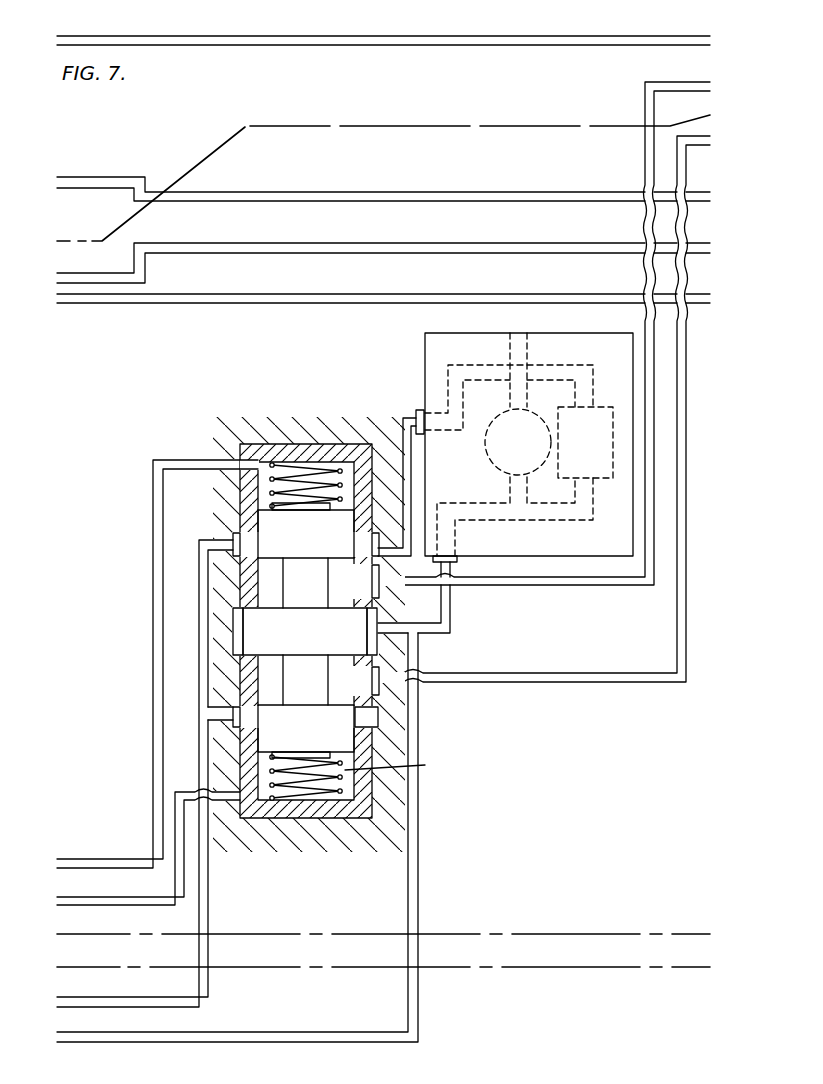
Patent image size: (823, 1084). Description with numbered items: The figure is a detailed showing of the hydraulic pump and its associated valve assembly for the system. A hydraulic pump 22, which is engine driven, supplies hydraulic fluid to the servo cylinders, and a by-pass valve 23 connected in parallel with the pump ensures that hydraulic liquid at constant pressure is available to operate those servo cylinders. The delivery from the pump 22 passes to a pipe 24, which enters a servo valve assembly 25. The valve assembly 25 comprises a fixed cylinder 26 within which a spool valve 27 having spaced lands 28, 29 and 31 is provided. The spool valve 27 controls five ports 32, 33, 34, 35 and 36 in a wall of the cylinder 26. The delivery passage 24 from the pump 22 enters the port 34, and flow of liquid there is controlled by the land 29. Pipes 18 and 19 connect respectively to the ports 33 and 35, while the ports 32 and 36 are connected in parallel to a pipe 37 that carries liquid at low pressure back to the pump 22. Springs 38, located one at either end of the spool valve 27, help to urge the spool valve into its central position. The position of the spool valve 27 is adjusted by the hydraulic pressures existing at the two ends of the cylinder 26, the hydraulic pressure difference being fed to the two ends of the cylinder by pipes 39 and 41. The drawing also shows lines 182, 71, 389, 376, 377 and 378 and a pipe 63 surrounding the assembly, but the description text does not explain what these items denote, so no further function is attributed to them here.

The boom line 182 is at (324, 43).
The pivot axis line 71 is at (208, 152).
The axis line 389 is at (652, 930).
The hydraulic line 376 is at (525, 193).
The hydraulic line 377 is at (615, 245).
The hydraulic line 378 is at (612, 297).
The pipe 19 is at (645, 113).
The pipe 18 is at (677, 155).
The hydraulic pump 22 is at (497, 465).
The by-pass valve 23 is at (600, 468).
The servo valve assembly 25 is at (320, 840).
The pipe 39 is at (85, 862).
The port 36 is at (240, 540).
The port 32 is at (233, 708).
The pipe 41 is at (73, 902).
The conduit 63 is at (305, 1030).
The pipe 37 is at (410, 452).
The pipe 24 is at (448, 605).
The springs 38 is at (277, 505).
The land 28 is at (306, 534).
The port 35 is at (355, 582).
The land 29 is at (305, 631).
The port 34 is at (252, 631).
The port 33 is at (357, 683).
The land 31 is at (318, 728).
The spool valve 27 is at (312, 756).
The fixed cylinder 26 is at (398, 766).